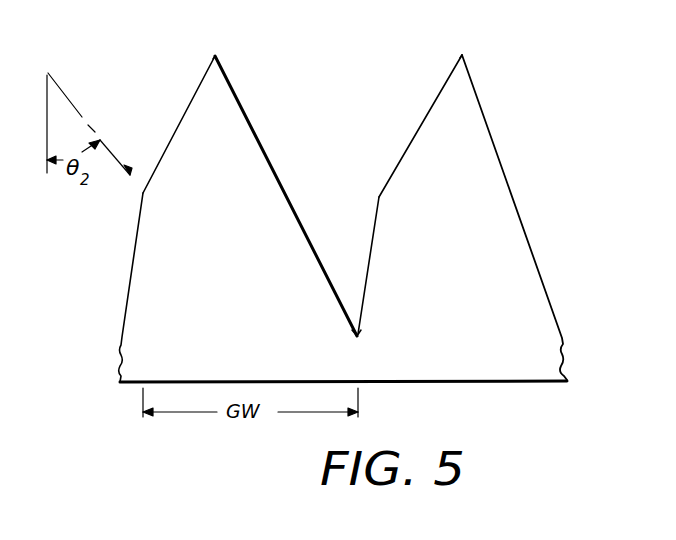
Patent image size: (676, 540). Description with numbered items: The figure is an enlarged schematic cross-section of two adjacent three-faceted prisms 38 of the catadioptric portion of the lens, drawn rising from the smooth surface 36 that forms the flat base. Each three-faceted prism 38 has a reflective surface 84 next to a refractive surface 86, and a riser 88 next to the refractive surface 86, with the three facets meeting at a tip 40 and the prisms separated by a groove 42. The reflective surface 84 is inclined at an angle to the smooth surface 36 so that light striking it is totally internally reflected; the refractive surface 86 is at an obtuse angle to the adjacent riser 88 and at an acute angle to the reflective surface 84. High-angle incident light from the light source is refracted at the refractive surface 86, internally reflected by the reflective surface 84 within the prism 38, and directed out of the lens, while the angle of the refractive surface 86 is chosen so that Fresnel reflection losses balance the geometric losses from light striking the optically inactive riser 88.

The smooth surface 36 is at (482, 383).
The three-faceted prism 38 is at (320, 196).
The tooth tip 40 is at (216, 53).
The groove 42 is at (353, 312).
The reflective surface 84 is at (262, 144).
The refractive surface 86 is at (187, 108).
The riser 88 is at (133, 250).